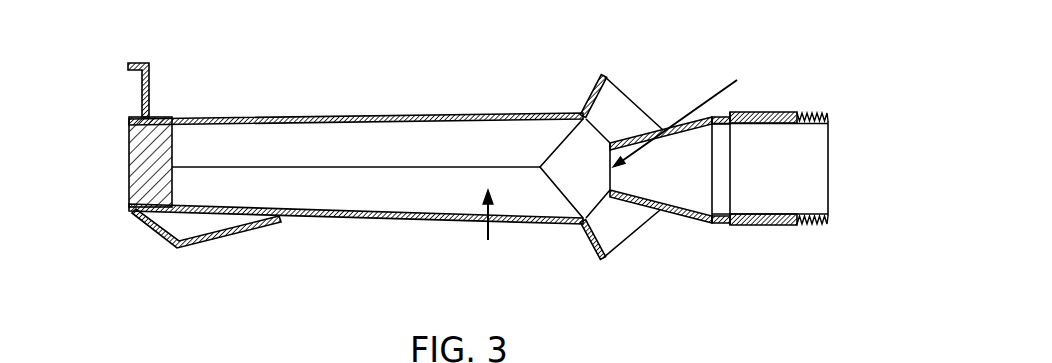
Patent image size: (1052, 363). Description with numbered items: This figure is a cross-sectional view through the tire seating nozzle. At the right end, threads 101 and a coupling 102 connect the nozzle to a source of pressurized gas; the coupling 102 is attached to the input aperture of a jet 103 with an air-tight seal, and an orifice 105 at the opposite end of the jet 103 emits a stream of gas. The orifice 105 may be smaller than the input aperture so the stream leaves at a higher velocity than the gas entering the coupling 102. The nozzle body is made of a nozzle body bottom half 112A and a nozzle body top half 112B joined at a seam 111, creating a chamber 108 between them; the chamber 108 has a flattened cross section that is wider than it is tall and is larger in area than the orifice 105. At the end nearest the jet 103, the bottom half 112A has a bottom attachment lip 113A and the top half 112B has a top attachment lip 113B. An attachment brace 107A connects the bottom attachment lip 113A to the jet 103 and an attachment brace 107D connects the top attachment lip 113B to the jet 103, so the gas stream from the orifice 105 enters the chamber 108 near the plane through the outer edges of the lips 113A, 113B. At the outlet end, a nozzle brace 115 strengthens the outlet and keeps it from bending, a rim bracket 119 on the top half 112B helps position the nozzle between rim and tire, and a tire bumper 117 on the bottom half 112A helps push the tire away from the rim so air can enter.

The threads 101 is at (833, 225).
The coupling 102 is at (760, 228).
The jet 103 is at (687, 218).
The orifice 105 is at (695, 110).
The attachment brace 107A is at (617, 237).
The attachment brace 107D is at (613, 103).
The chamber 108 is at (474, 234).
The seam 111 is at (459, 167).
The nozzle body bottom half 112A is at (343, 218).
The nozzle body top half 112B is at (347, 118).
The bottom attachment lip 113A is at (588, 245).
The top attachment lip 113B is at (590, 95).
The nozzle brace 115 is at (130, 175).
The tire bumper 117 is at (230, 237).
The rim bracket 119 is at (150, 68).